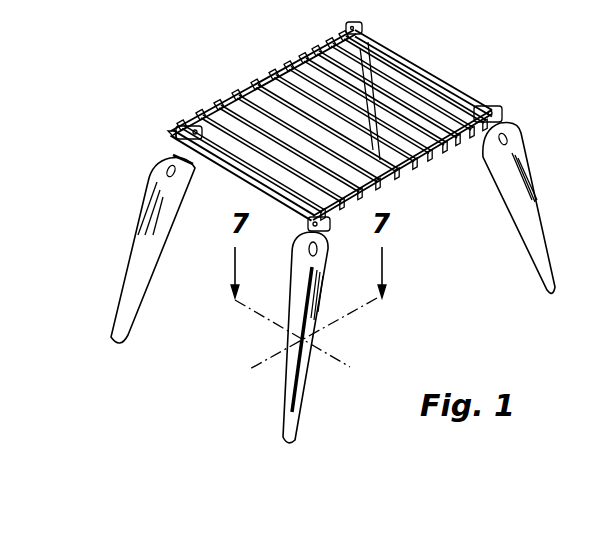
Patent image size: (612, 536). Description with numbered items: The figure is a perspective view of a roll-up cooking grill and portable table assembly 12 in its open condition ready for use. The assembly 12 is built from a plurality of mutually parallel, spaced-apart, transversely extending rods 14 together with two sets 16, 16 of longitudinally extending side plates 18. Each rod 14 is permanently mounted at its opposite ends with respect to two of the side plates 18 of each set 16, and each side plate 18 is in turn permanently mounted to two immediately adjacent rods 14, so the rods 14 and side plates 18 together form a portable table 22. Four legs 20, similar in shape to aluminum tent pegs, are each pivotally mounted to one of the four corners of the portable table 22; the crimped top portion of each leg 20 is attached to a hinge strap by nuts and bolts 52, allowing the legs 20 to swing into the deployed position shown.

The roll-up cooking grill and portable table assembly 12 is at (428, 41).
The rods 14 is at (427, 82).
The set of side plates 16 is at (362, 25).
The side plate 18 is at (283, 67).
The leg 20 is at (120, 318).
The portable table 22 is at (200, 100).
The nuts and bolts 52 is at (350, 30).